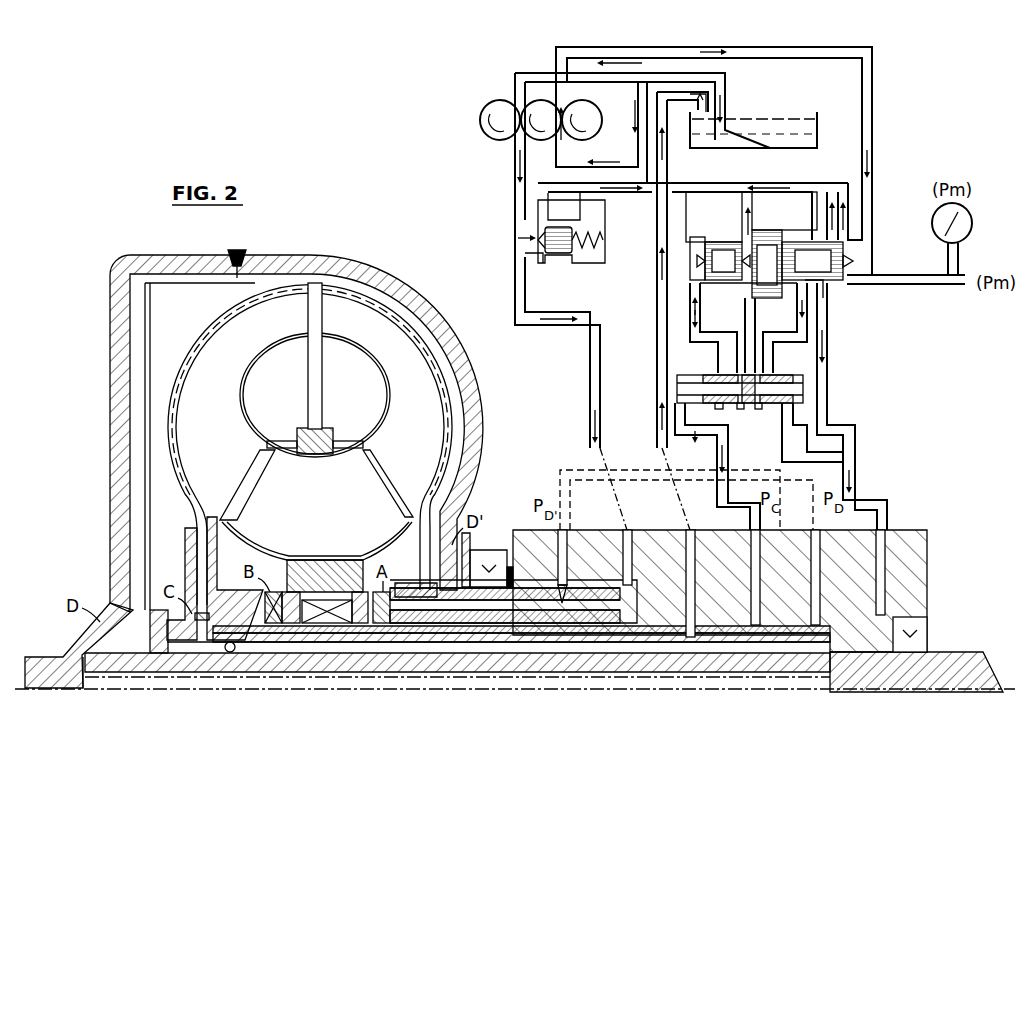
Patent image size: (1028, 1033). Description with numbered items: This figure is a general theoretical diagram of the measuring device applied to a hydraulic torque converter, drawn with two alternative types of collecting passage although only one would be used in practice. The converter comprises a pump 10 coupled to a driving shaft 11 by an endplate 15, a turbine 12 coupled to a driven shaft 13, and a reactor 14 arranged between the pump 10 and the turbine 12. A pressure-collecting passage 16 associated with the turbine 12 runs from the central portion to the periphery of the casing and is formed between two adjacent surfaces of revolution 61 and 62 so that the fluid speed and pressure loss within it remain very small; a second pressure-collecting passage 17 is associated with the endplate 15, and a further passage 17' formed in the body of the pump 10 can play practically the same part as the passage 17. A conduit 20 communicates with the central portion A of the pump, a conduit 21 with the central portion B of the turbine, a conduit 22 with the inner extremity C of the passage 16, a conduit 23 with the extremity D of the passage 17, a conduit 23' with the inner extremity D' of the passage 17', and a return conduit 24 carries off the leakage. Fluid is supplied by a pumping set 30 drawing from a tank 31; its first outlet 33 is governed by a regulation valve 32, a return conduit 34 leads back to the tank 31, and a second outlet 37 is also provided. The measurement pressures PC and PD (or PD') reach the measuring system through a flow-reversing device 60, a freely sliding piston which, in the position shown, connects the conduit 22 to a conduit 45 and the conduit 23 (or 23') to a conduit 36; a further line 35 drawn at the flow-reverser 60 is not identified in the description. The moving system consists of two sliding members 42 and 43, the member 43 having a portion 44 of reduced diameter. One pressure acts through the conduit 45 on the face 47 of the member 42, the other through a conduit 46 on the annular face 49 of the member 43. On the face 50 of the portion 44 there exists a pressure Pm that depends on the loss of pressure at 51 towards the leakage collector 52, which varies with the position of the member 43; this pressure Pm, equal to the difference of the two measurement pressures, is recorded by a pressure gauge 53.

The pump 10 is at (427, 429).
The driving shaft 11 is at (40, 660).
The turbine 12 is at (220, 429).
The driven shaft 13 is at (608, 663).
The reactor 14 is at (319, 510).
The endplate 15 is at (110, 489).
The pressure-collecting passage 16 is at (178, 467).
The second pressure-collecting passage 17 is at (296, 451).
The further passage 17' is at (459, 311).
The conduit 20 is at (632, 532).
The conduit 21 is at (695, 532).
The conduit 22 is at (760, 532).
The conduit 23 is at (831, 565).
The conduit 23' is at (582, 556).
The return conduit 24 is at (885, 532).
The pumping set 30 is at (543, 142).
The tank 31 is at (763, 110).
The regulation valve 32 is at (562, 262).
The first outlet 33 is at (597, 386).
The return conduit 34 is at (658, 388).
The conduit 35 is at (705, 440).
The conduit 36 is at (800, 440).
The second outlet 37 is at (830, 49).
The sliding member 42 is at (722, 246).
The sliding member 43 is at (771, 240).
The portion of reduced diameter 44 is at (834, 284).
The conduit 45 is at (723, 333).
The conduit 46 is at (782, 345).
The face 47 is at (696, 242).
The annular face 49 is at (790, 290).
The face 50 is at (855, 284).
The pressure-loss point 51 is at (843, 245).
The leakage collector 52 is at (722, 193).
The pressure gauge 53 is at (972, 226).
The flow-reversing device 60 is at (750, 412).
The surface 61 is at (201, 342).
The surface 62 is at (215, 327).